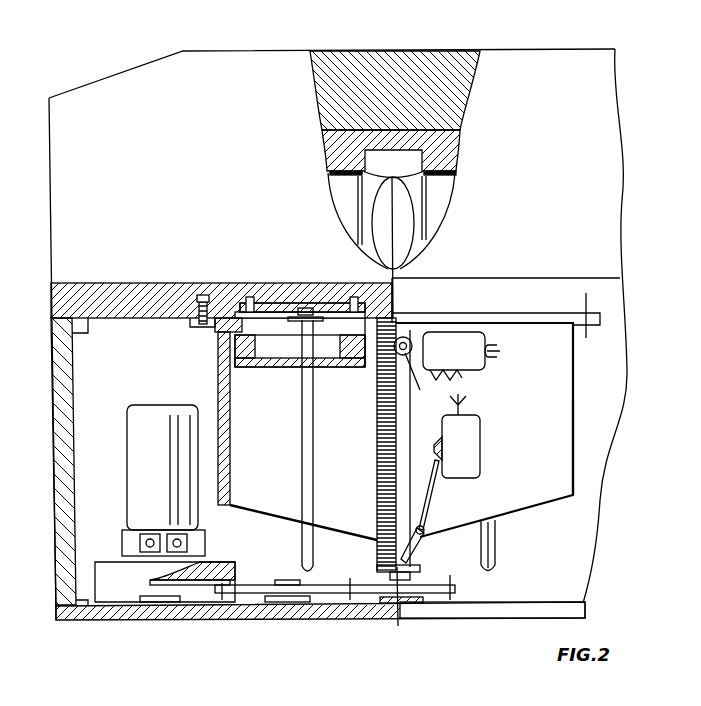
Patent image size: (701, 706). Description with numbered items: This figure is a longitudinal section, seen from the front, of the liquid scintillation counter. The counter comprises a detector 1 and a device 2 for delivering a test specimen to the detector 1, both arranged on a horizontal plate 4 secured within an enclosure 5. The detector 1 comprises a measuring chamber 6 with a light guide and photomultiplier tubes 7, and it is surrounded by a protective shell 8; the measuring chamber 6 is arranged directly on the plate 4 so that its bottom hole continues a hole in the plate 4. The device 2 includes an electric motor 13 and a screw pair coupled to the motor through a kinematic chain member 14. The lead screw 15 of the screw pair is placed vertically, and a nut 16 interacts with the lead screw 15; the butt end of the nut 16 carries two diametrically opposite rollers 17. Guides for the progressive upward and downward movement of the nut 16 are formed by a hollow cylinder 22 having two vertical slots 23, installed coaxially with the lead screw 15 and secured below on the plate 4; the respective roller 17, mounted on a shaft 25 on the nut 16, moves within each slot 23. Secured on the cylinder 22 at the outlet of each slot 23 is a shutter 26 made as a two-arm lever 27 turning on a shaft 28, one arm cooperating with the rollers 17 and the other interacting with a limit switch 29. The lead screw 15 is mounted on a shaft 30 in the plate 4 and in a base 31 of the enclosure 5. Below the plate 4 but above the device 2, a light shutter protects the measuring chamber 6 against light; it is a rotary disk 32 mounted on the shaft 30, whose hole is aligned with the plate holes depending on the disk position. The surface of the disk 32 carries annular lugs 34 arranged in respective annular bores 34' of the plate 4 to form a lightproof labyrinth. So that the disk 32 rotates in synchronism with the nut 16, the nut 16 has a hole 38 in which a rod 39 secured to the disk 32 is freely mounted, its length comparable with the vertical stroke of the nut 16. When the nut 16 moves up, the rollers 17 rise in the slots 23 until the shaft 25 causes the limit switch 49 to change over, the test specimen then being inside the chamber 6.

The detector 1 is at (514, 50).
The device for delivering a test specimen 2 is at (576, 397).
The horizontal plate 4 is at (108, 293).
The enclosure 5 is at (62, 562).
The measuring chamber 6 is at (461, 138).
The photomultiplier tubes 7 is at (442, 188).
The protective shell 8 is at (466, 80).
The electric motor 13 is at (127, 416).
The kinematic chain member 14 is at (240, 621).
The lead screw 15 is at (376, 453).
The nut 16 is at (348, 370).
The rollers 17 is at (418, 323).
The hollow cylinder 22 is at (560, 449).
The vertical slots 23 is at (407, 495).
The shaft 25 is at (416, 376).
The shutter 26 is at (470, 521).
The two-arm lever 27 is at (428, 546).
The shaft 28 is at (432, 522).
The limit switch 29 is at (481, 416).
The shaft 30 is at (385, 292).
The base 31 is at (508, 612).
The rotary disk 32 is at (292, 299).
The annular lugs 34 is at (220, 286).
The annular bores 34' is at (302, 280).
The hole 38 is at (290, 371).
The rod 39 is at (303, 426).
The limit switch 49 is at (478, 364).